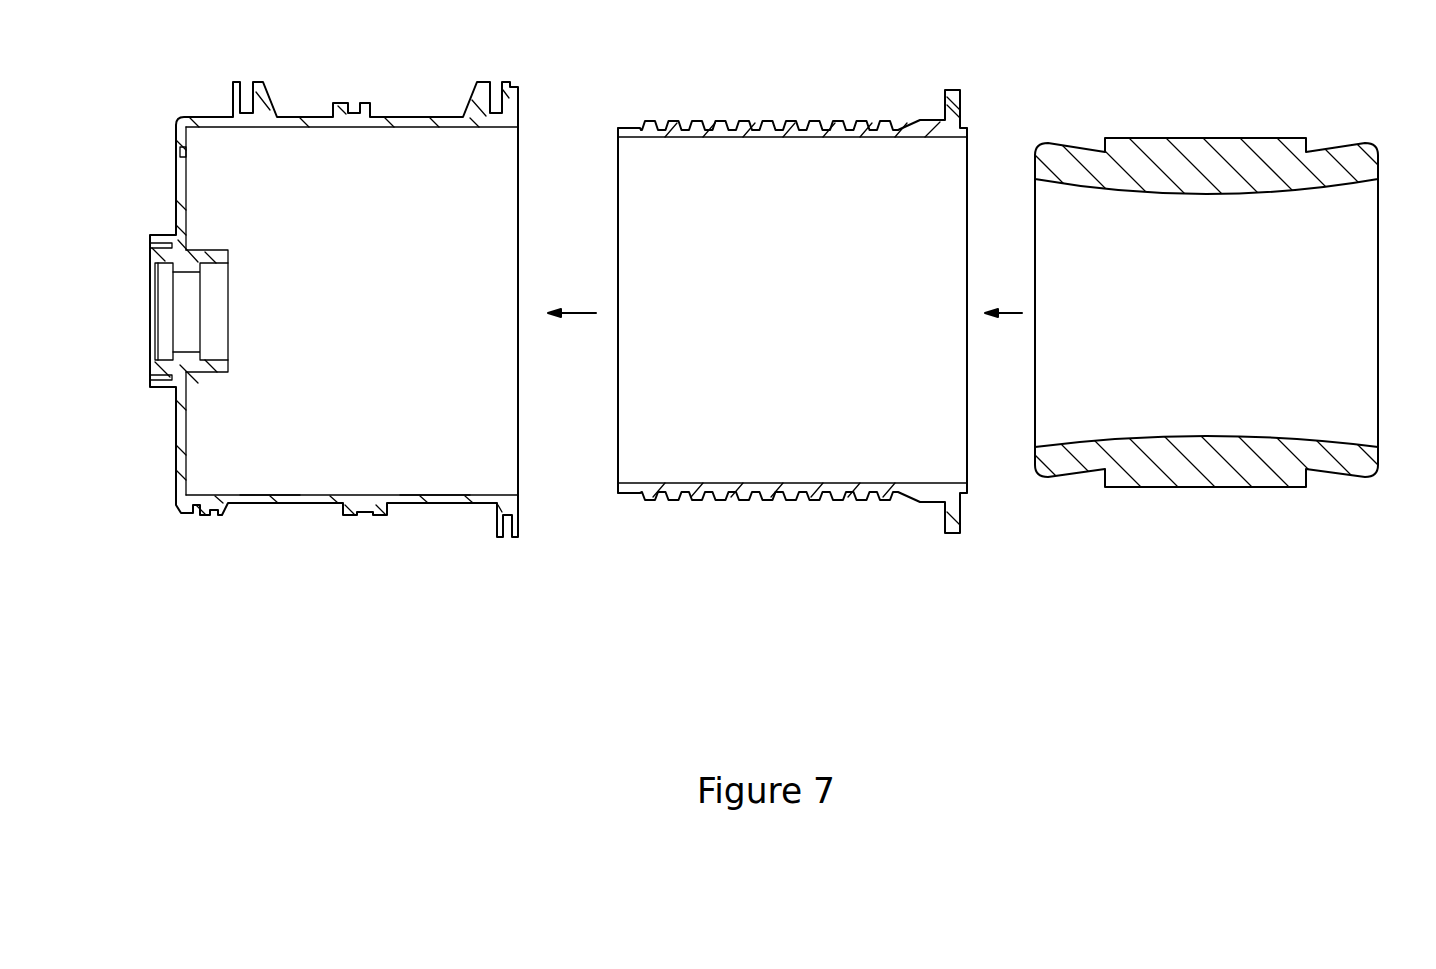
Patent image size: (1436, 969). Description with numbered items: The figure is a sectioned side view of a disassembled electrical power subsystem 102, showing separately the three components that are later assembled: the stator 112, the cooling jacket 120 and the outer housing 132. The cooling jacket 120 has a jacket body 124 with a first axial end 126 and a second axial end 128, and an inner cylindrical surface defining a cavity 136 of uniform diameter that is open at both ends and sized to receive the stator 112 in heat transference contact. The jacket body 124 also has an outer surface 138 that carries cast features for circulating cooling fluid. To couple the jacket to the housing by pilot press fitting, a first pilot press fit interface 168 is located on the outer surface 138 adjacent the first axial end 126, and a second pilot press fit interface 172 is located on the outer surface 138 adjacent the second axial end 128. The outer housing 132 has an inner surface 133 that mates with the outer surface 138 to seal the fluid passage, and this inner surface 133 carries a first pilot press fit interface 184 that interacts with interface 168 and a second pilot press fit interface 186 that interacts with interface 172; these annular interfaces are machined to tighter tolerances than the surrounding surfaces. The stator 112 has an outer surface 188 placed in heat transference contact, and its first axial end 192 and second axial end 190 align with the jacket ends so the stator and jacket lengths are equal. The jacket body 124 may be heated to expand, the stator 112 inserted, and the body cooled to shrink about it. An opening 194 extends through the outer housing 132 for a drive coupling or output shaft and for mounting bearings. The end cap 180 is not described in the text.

The electrical power subsystem 102 is at (790, 347).
The stator 112 is at (1220, 480).
The cooling jacket 120 is at (790, 317).
The jacket body 124 is at (947, 97).
The first axial end 126 is at (972, 133).
The second axial end 128 is at (605, 133).
The outer housing 132 is at (322, 512).
The inner surface 133 is at (442, 491).
The cavity 136 is at (273, 437).
The outer surface 138 is at (768, 502).
The first pilot press fit interface 168 is at (935, 508).
The second pilot press fit interface 172 is at (655, 114).
The end cap 180 is at (308, 298).
The first pilot press fit interface 184 is at (510, 491).
The second pilot press fit interface 186 is at (216, 133).
The outer surface 188 is at (1193, 140).
The second axial end 190 is at (1027, 157).
The first axial end 192 is at (1384, 159).
The opening 194 is at (183, 342).